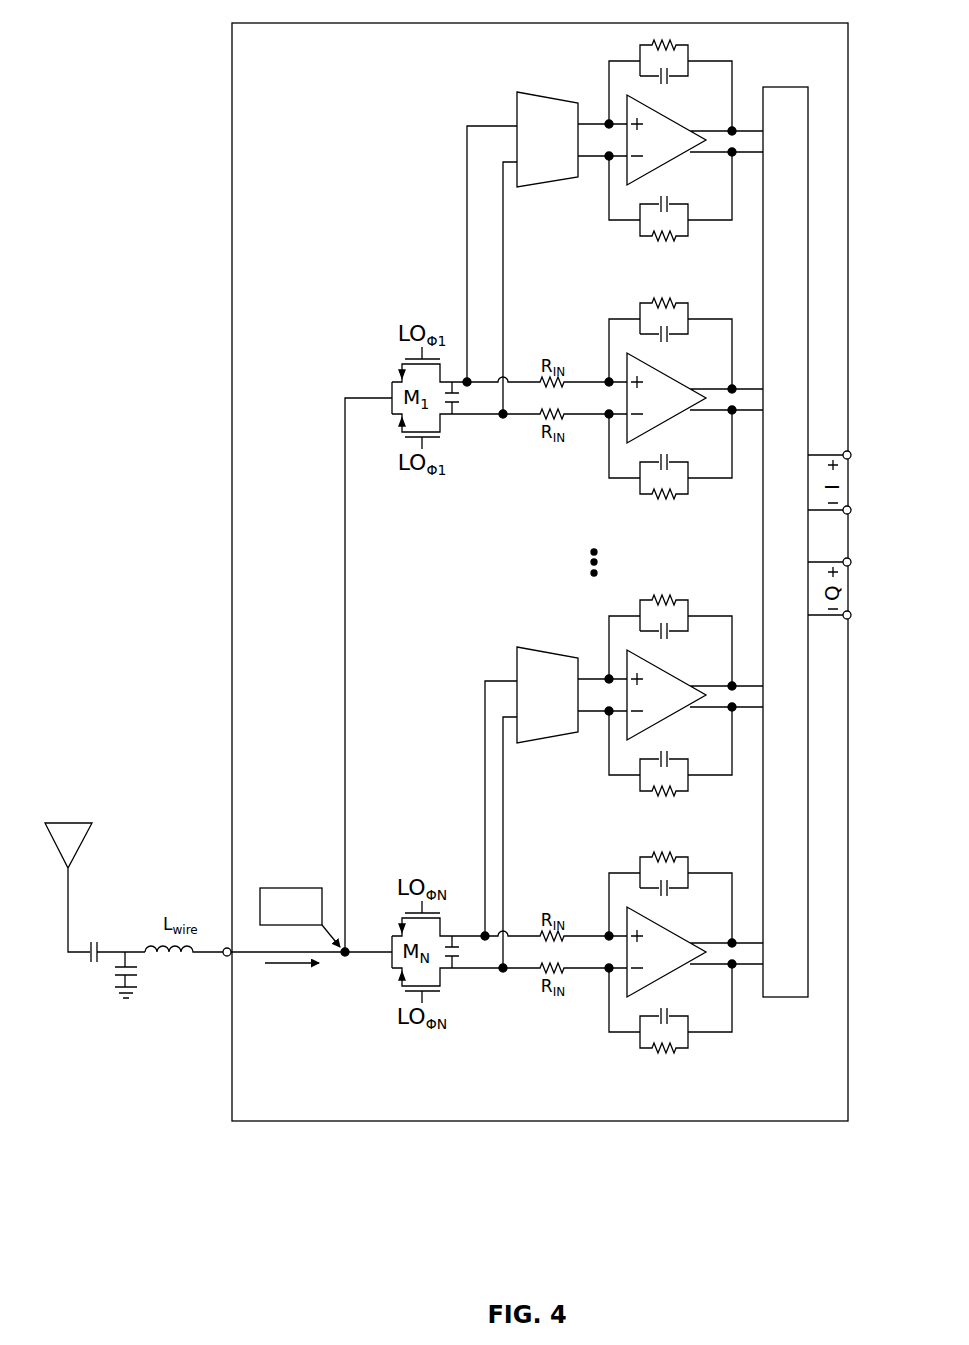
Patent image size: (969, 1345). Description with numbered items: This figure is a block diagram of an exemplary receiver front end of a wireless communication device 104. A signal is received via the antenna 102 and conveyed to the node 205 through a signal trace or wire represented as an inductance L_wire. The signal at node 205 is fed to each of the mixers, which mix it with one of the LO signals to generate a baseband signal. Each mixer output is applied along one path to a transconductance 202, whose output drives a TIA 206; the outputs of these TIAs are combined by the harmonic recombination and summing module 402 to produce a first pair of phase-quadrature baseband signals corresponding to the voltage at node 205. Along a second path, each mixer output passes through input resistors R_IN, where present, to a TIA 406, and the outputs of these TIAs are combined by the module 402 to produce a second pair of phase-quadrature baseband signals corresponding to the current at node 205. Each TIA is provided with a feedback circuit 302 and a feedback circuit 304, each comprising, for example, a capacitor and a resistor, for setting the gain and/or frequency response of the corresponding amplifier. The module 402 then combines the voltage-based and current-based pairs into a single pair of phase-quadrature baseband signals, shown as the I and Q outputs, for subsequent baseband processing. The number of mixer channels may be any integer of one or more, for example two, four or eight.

The antenna 102 is at (86, 812).
The wireless communication device 104 is at (229, 81).
The transconductance 202 is at (572, 417).
The node 205 is at (347, 955).
The TIA 206 is at (684, 417).
The feedback circuit 302 is at (691, 47).
The feedback circuit 304 is at (631, 238).
The harmonic recombination and summing module 402 is at (785, 542).
The TIA 406 is at (684, 675).